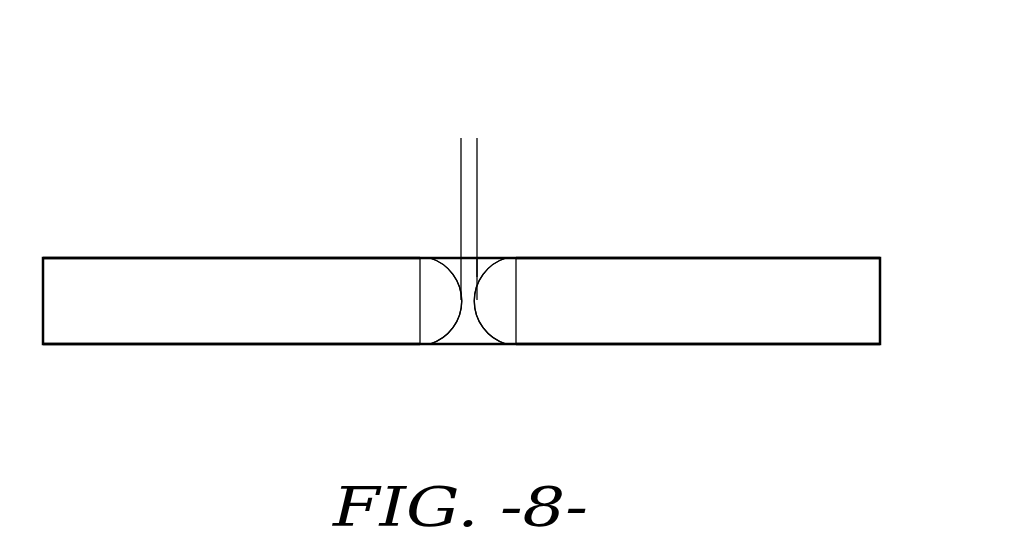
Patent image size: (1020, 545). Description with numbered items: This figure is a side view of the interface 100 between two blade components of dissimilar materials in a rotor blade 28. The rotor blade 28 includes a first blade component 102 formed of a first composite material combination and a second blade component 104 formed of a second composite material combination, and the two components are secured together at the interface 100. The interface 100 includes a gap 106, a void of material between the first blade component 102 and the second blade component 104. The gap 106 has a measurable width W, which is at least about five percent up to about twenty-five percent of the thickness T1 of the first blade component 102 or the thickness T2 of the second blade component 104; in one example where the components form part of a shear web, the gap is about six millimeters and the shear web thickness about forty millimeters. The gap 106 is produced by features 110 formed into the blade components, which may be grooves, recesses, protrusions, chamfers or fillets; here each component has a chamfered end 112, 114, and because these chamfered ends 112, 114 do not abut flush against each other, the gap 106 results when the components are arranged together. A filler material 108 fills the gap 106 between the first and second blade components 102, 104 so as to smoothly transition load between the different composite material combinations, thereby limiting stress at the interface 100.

The rotor blade 28 is at (461, 209).
The interface 100 is at (454, 242).
The first blade component 102 is at (299, 242).
The second blade component 104 is at (653, 242).
The gap 106 is at (484, 242).
The filler material 108 is at (463, 332).
The features 110 is at (444, 331).
The chamfered end 112 is at (452, 344).
The chamfered end 114 is at (487, 344).
The width of the gap W is at (408, 157).
The thickness of the first blade component T1 is at (108, 415).
The thickness of the second blade component T2 is at (798, 413).